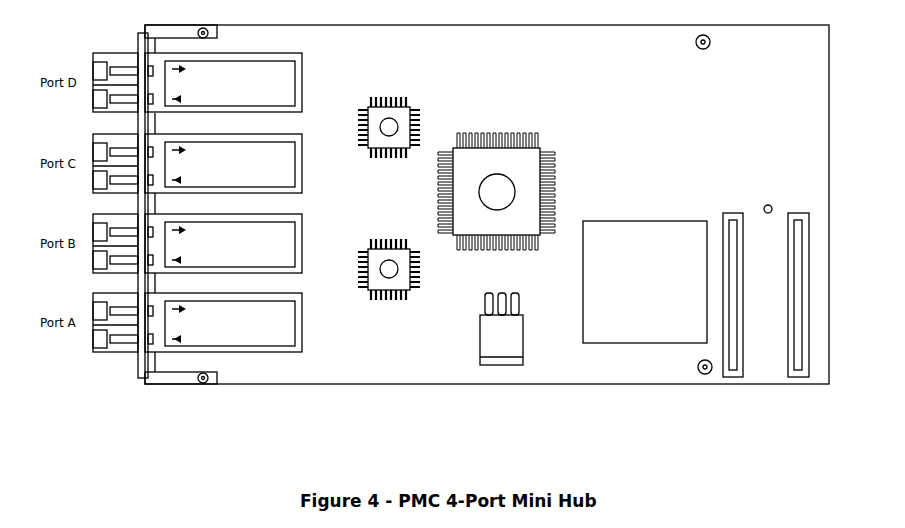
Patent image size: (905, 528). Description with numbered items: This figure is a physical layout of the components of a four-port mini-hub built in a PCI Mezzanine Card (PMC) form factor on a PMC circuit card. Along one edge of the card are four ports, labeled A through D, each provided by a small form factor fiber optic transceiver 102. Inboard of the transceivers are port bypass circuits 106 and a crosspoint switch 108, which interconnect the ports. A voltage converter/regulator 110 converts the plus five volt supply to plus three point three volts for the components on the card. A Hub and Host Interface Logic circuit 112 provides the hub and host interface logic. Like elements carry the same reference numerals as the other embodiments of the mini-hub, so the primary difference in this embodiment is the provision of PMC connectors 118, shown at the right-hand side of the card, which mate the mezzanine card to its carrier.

The small form factor fiber optic transceivers 102 is at (302, 83).
The port bypass circuits 106 is at (411, 106).
The crosspoint switch 108 is at (541, 148).
The voltage converter/regulator 110 is at (481, 366).
The Hub and Host Interface Logic circuit 112 is at (650, 344).
The PMC connectors 118 is at (728, 212).